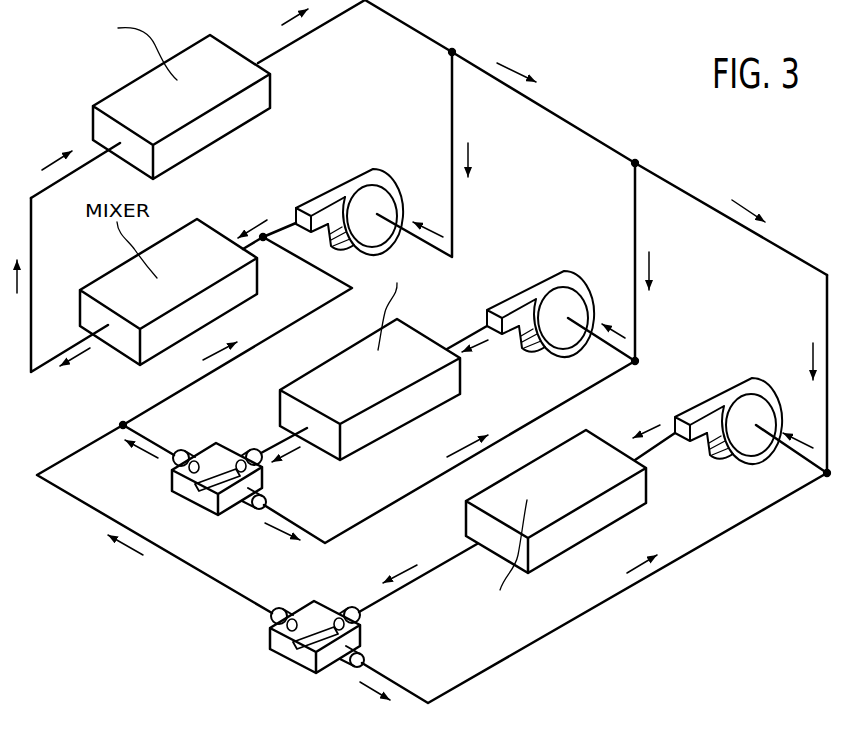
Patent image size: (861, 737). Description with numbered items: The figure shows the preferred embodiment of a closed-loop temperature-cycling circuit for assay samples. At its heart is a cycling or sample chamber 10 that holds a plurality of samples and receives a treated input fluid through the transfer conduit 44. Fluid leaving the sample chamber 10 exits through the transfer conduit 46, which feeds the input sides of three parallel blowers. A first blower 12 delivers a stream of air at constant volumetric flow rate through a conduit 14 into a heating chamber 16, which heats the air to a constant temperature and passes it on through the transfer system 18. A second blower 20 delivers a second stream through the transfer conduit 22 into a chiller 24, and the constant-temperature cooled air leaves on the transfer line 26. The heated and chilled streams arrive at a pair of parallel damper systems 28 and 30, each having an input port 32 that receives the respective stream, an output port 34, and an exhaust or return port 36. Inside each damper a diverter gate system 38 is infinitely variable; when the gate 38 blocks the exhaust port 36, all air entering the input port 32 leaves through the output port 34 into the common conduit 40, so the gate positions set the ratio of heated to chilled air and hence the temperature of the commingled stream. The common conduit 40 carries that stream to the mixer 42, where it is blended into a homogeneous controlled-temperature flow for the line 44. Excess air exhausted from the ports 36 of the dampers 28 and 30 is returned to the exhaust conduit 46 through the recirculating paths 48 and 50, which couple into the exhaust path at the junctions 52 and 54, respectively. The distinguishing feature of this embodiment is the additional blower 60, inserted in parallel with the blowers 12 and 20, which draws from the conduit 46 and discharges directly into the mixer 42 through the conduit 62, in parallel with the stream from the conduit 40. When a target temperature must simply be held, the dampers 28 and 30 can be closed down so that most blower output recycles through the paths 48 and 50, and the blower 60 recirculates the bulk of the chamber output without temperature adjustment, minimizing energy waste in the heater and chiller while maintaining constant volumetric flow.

The sample chamber 10 is at (233, 120).
The blower 12 is at (491, 311).
The conduit 14 is at (455, 344).
The heating chamber 16 is at (391, 432).
The transfer system 18 is at (273, 441).
The blower 20 is at (679, 417).
The transfer conduit 22 is at (655, 444).
The chiller 24 is at (590, 430).
The transfer line 26 is at (450, 559).
The damper system 28 is at (211, 503).
The damper system 30 is at (362, 637).
The input port 32 is at (247, 450).
The output port 34 is at (183, 451).
The exhaust port 36 is at (266, 502).
The diverter gate system 38 is at (190, 494).
The common conduit 40 is at (321, 270).
The mixer 42 is at (224, 233).
The transfer conduit 44 is at (31, 256).
The transfer conduit 46 is at (297, 40).
The recirculating path 48 is at (545, 414).
The recirculating path 50 is at (463, 685).
The coupling 52 is at (637, 360).
The coupling 54 is at (827, 475).
The blower 60 is at (373, 170).
The conduit 62 is at (296, 208).